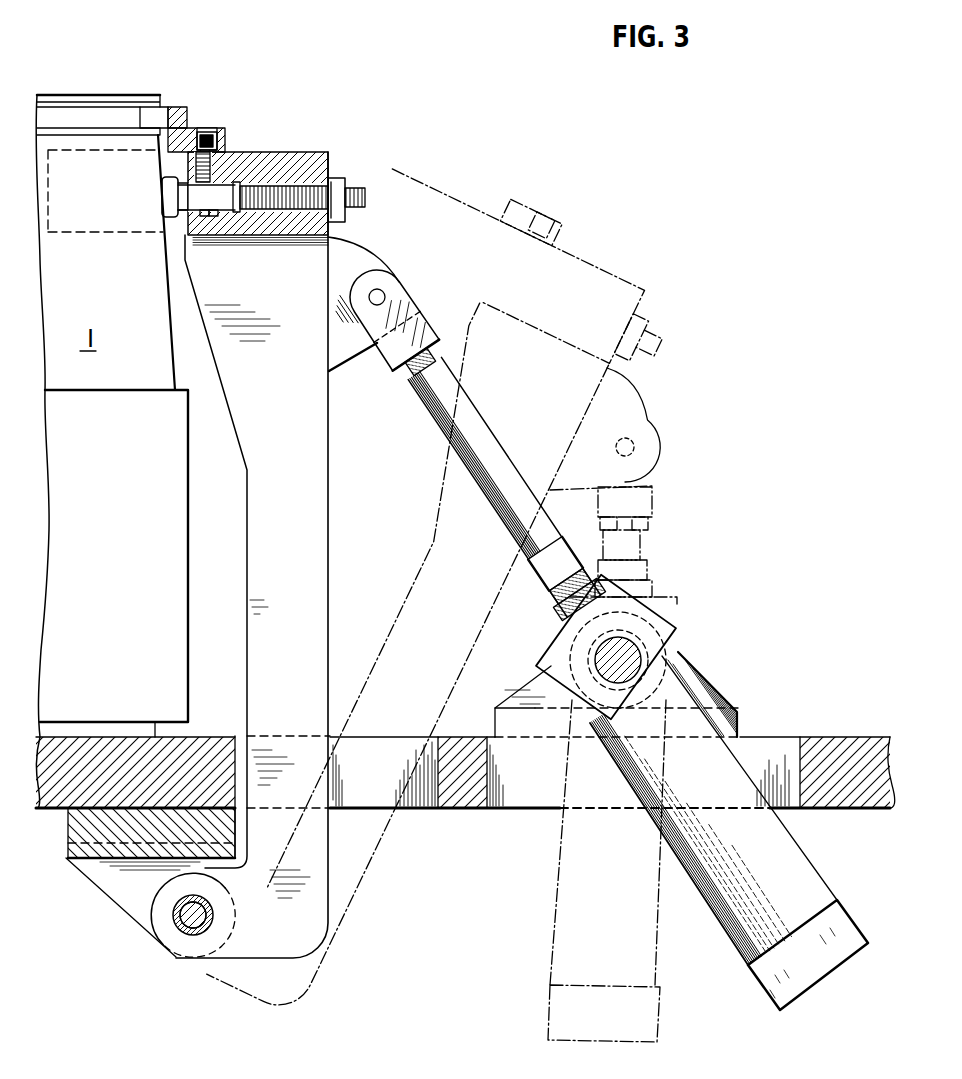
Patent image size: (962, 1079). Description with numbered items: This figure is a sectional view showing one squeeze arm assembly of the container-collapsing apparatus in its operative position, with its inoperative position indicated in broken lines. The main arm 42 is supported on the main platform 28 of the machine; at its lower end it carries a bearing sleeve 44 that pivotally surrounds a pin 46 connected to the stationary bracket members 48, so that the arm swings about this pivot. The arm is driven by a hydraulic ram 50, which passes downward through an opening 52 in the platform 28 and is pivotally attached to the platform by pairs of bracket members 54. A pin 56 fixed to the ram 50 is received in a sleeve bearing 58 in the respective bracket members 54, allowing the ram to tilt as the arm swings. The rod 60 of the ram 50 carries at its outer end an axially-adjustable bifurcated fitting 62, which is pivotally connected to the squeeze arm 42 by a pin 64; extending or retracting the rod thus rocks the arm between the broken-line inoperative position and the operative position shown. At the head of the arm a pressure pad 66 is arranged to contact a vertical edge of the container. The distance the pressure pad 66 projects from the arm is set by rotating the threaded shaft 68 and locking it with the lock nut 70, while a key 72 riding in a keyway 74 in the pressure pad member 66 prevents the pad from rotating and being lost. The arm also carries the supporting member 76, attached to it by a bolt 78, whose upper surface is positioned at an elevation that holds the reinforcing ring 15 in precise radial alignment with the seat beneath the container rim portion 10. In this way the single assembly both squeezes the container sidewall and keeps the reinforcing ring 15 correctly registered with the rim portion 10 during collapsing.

The rim portion 10 is at (121, 95).
The reinforcing ring 15 is at (179, 107).
The supporting member 76 is at (188, 129).
The bolt 78 is at (222, 131).
The threaded shaft 68 is at (277, 187).
The lock nut 70 is at (336, 182).
The pressure pad 66 is at (160, 197).
The key 72 is at (207, 217).
The keyway 74 is at (214, 217).
The main arm 42 is at (311, 433).
The main platform 28 is at (458, 798).
The opening 52 is at (530, 794).
The stationary bracket members 48 is at (118, 879).
The bearing sleeve 44 is at (185, 929).
The pin 46 is at (182, 917).
The hydraulic ram 50 is at (784, 855).
The bracket members 54 is at (716, 694).
The pin 56 is at (652, 641).
The sleeve bearing 58 is at (662, 648).
The rod 60 is at (494, 466).
The bifurcated fitting 62 is at (383, 350).
The pin 64 is at (386, 297).